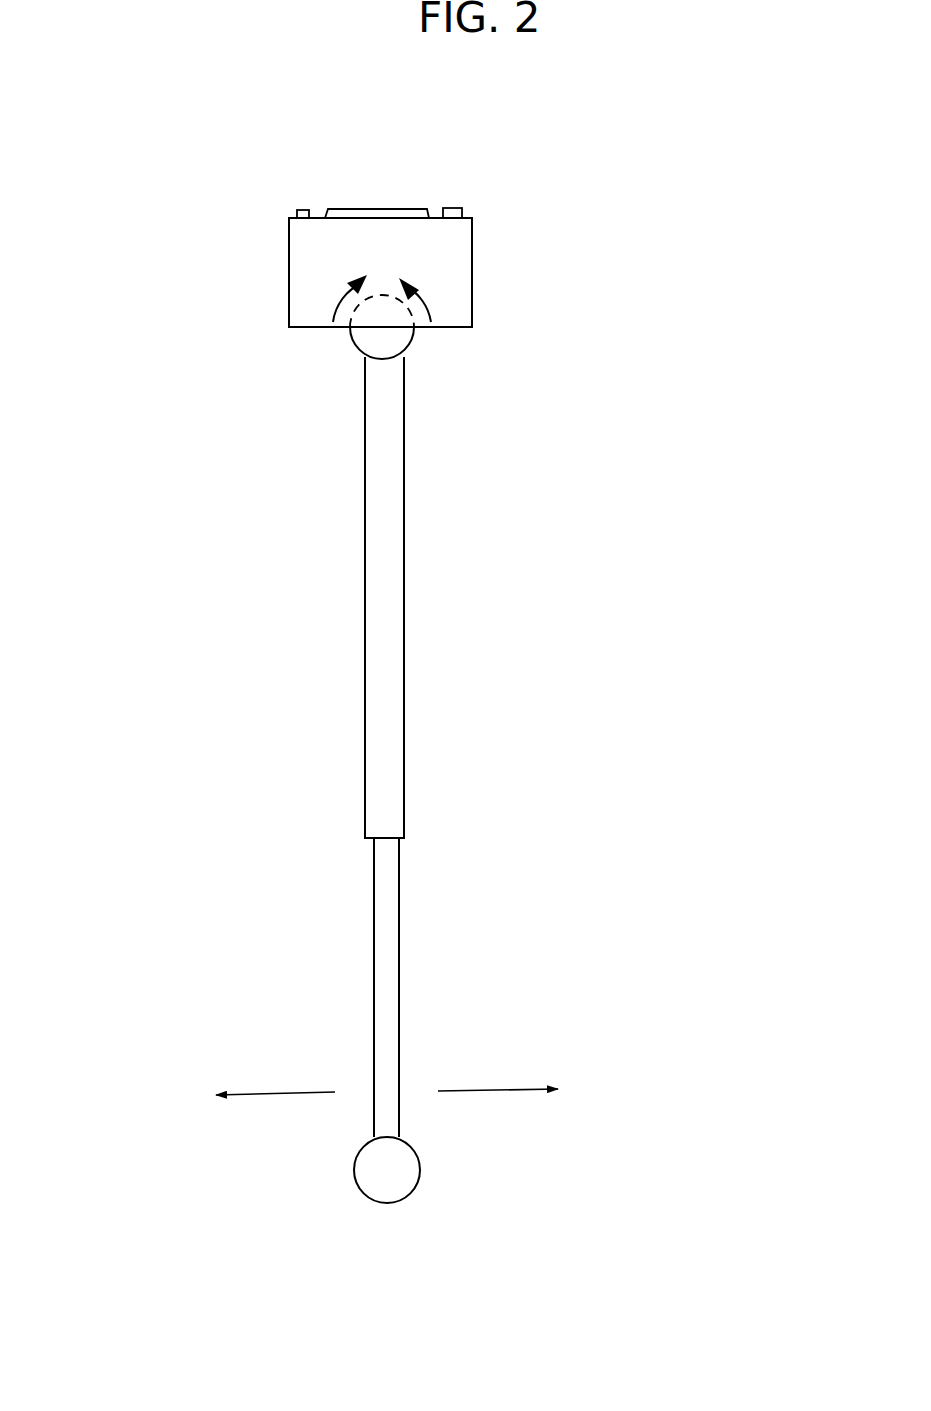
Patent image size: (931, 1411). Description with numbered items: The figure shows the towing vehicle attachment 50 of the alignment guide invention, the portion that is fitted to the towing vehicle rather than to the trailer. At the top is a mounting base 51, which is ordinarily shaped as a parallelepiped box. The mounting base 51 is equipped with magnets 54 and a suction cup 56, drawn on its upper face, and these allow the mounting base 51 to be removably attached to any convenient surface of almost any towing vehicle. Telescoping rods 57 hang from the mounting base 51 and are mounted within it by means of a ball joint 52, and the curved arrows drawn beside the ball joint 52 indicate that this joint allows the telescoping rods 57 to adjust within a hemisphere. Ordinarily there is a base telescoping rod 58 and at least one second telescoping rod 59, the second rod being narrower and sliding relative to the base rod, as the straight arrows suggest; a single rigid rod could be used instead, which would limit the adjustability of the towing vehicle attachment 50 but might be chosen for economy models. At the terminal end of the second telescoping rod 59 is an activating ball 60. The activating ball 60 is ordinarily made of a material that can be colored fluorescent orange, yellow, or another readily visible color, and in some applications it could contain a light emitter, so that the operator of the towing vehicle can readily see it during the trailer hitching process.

The towing vehicle attachment 50 is at (493, 275).
The mounting base 51 is at (289, 308).
The ball joint 52 is at (355, 347).
The magnets 54 is at (298, 212).
The suction cup 56 is at (410, 210).
The telescoping rods 57 is at (510, 773).
The base telescoping rod 58 is at (440, 535).
The second telescoping rod 59 is at (443, 993).
The activating ball 60 is at (362, 1192).